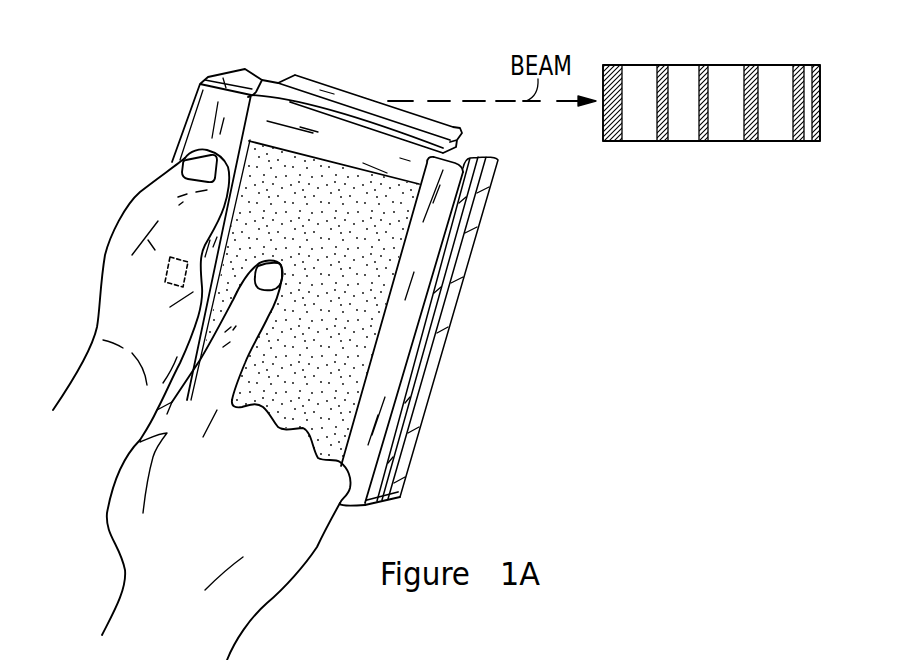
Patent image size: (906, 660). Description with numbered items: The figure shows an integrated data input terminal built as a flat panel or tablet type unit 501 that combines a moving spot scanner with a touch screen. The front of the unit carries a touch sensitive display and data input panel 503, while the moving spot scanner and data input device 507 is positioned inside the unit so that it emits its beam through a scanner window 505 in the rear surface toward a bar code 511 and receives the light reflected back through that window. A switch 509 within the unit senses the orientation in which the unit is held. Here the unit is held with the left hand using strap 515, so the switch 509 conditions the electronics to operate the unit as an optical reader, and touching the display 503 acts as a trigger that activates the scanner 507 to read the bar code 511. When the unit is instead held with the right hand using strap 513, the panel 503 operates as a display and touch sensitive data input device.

The flat panel unit 501 is at (498, 157).
The touch sensitive display and data input panel 503 is at (385, 305).
The scanner window 505 is at (417, 131).
The moving spot scanner and data input device 507 is at (337, 357).
The switch 509 is at (175, 257).
The bar code 511 is at (712, 67).
The strap 513 is at (463, 261).
The strap 515 is at (187, 123).